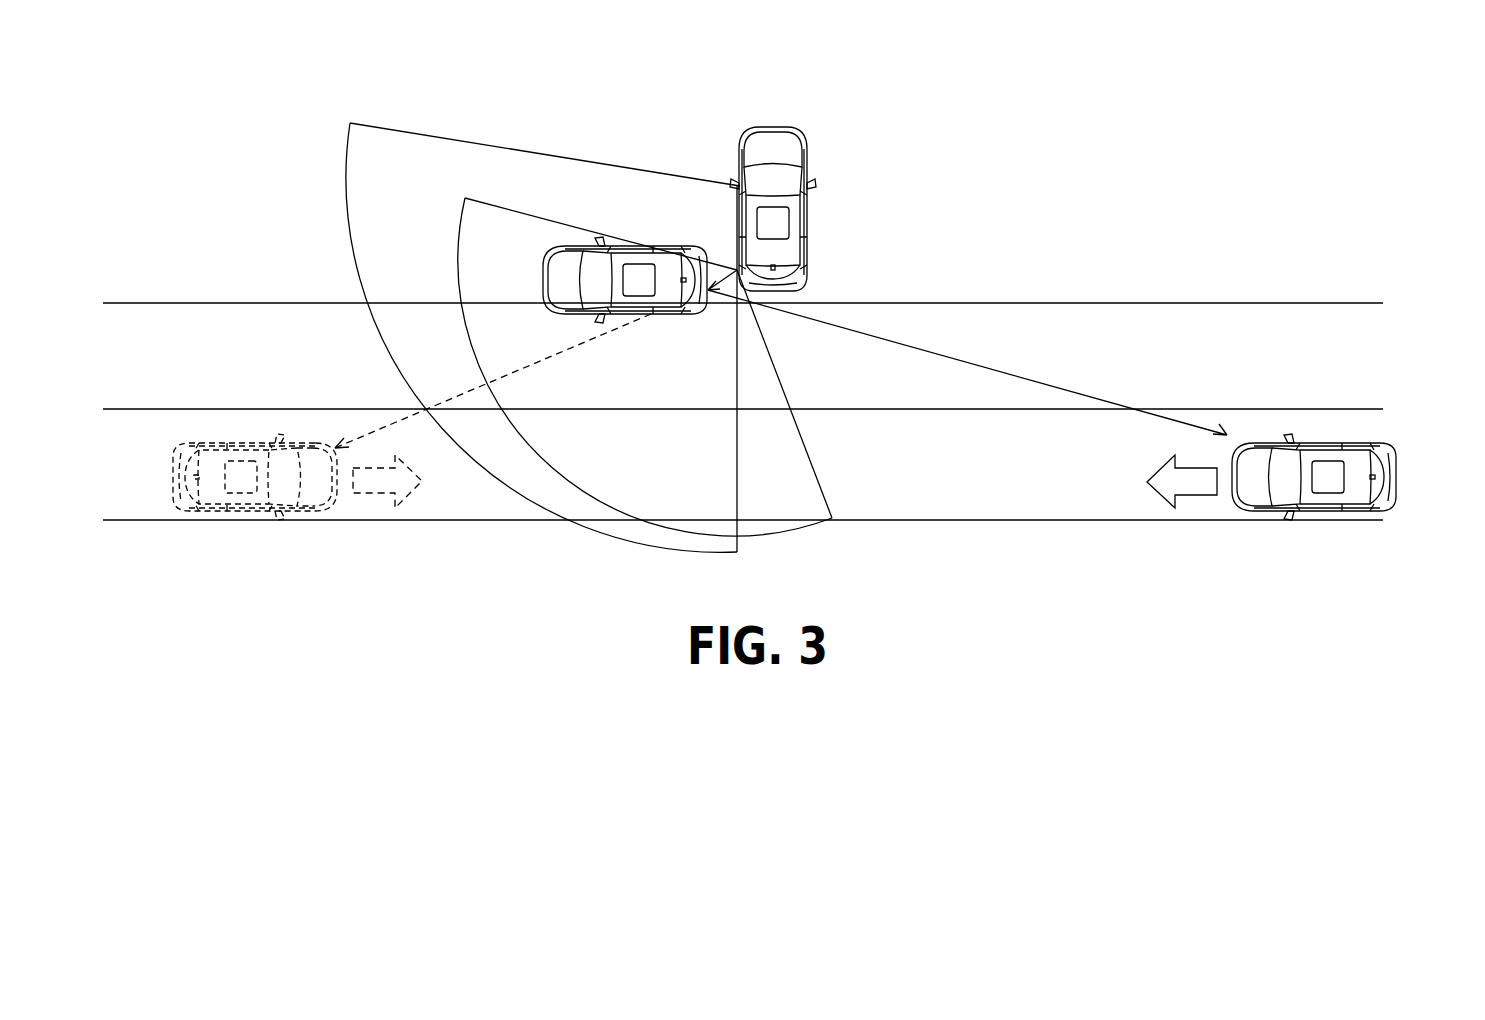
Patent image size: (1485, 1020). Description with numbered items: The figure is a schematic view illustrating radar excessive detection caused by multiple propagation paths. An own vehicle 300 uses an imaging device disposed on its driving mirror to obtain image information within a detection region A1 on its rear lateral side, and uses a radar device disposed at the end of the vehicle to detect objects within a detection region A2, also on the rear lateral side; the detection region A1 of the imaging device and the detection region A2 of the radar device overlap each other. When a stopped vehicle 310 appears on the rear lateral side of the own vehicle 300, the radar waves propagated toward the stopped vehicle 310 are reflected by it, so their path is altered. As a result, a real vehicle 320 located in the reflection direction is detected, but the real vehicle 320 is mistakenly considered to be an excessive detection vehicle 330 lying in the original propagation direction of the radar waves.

The own vehicle 300 is at (792, 128).
The stopped vehicle 310 is at (655, 247).
The real vehicle 320 is at (1389, 446).
The excessive detection vehicle 330 is at (177, 452).
The detection region A1 is at (435, 162).
The detection region A2 is at (798, 488).